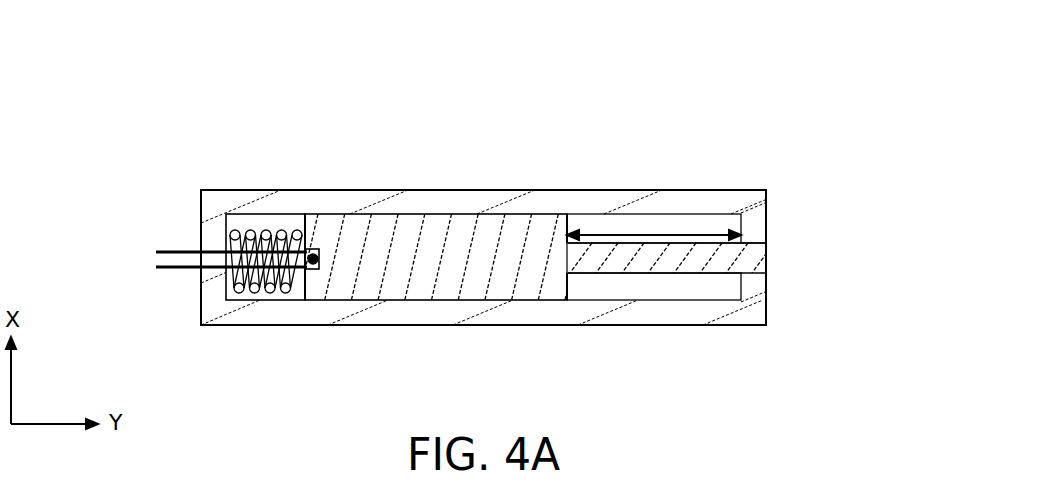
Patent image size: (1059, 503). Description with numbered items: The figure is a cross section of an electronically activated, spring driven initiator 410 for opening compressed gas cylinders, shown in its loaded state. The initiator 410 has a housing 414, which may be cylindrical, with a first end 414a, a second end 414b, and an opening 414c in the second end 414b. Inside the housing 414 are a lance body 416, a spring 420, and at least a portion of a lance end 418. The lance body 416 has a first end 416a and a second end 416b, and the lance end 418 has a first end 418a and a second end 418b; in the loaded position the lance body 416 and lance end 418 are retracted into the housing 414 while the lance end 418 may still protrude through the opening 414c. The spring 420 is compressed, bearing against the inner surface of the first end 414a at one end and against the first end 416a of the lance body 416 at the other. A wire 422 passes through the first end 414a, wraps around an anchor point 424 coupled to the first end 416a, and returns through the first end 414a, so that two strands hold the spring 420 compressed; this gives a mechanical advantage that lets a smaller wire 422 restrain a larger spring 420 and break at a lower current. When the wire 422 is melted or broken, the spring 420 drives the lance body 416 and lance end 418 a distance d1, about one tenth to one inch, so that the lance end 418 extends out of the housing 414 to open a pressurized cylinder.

The initiator 410 is at (188, 124).
The housing 414 is at (404, 197).
The first end of housing 414a is at (200, 295).
The second end of housing 414b is at (768, 198).
The opening 414c is at (793, 253).
The lance body 416 is at (480, 285).
The first end of lance body 416a is at (305, 297).
The second end of lance body 416b is at (571, 222).
The lance end 418 is at (657, 263).
The first end of lance end 418a is at (571, 275).
The second end of lance end 418b is at (766, 264).
The spring 420 is at (284, 229).
The wire 422 is at (160, 251).
The anchor point 424 is at (313, 266).
The distance d1 is at (655, 232).